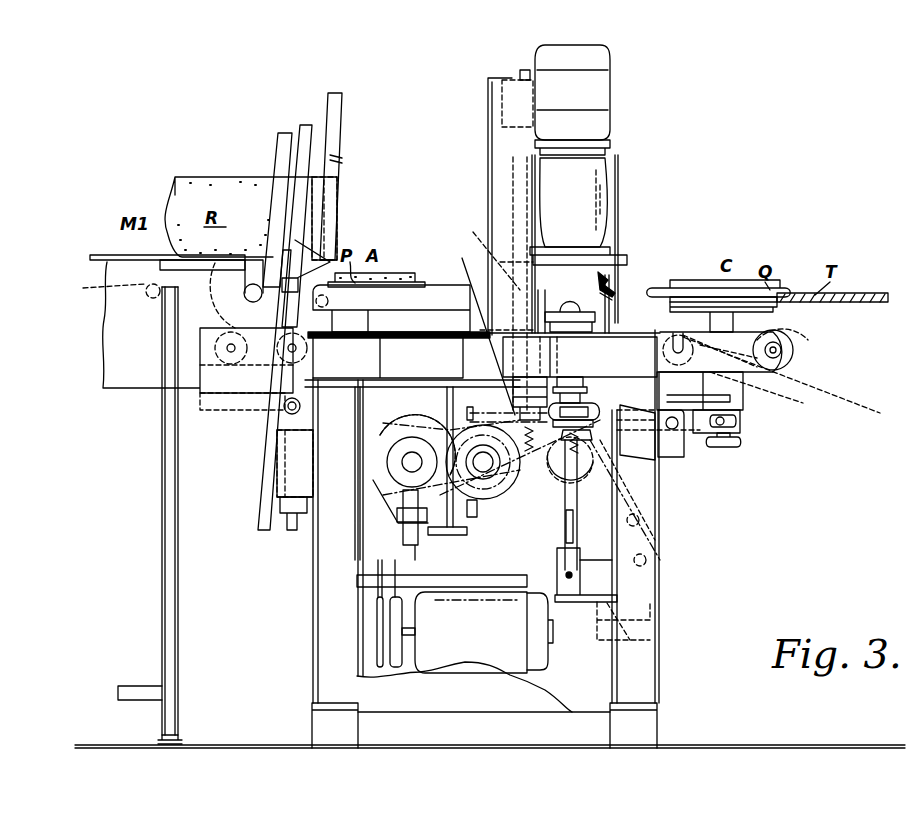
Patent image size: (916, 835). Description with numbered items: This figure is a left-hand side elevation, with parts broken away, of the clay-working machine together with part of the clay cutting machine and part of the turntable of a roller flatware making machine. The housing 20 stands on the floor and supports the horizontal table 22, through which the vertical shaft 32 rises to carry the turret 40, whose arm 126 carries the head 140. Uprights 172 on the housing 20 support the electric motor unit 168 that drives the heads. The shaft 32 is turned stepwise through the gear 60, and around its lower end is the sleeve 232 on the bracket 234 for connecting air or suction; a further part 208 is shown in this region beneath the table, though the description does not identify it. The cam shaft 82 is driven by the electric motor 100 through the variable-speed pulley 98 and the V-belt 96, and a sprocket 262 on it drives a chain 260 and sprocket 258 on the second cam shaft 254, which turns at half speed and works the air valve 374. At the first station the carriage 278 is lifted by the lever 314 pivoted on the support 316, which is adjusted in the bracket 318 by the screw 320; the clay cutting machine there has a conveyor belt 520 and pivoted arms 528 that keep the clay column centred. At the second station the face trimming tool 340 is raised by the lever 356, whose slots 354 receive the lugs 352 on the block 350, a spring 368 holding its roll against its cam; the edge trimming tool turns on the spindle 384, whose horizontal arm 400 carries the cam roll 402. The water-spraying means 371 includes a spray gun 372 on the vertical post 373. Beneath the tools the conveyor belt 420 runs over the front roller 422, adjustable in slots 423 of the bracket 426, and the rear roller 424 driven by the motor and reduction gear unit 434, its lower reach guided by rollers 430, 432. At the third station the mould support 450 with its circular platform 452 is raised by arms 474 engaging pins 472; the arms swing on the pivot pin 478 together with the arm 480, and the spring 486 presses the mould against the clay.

The housing 20 is at (313, 613).
The table 22 is at (660, 366).
The shaft 32 is at (642, 498).
The turret 40 is at (620, 195).
The bevel gear 60 is at (528, 492).
The cam shaft 82 is at (487, 472).
The V-belt 96 is at (385, 617).
The variable-speed pulley 98 is at (380, 650).
The electric motor 100 is at (495, 649).
The arm 126 is at (600, 172).
The head 140 is at (627, 258).
The electric motor unit 168 is at (592, 97).
The uprights 172 is at (497, 108).
The slide rod 208 is at (566, 522).
The sleeve 232 is at (575, 578).
The bracket 234 is at (587, 602).
The cam shaft 254 is at (402, 462).
The sprocket 258 is at (395, 437).
The chain 260 is at (457, 435).
The sprocket 262 is at (505, 530).
The carriage 278 is at (432, 290).
The lever 314 is at (283, 407).
The support 316 is at (290, 420).
The bracket 318 is at (300, 447).
The screw 320 is at (292, 530).
The face trimming tool 340 is at (571, 297).
The rectangular block 350 is at (600, 425).
The rectangular lugs 352 is at (570, 410).
The longitudinal slots 354 is at (597, 407).
The lever 356 is at (602, 430).
The spring 368 is at (640, 520).
The water-spraying means 371 is at (617, 292).
The spray gun 372 is at (617, 281).
The vertical post 373 is at (613, 320).
The air valve 374 is at (400, 535).
The vertical spindle 384 is at (480, 251).
The horizontal arm 400 is at (475, 327).
The cam roll 402 is at (487, 427).
The conveyor belt 420 is at (809, 330).
The front roller 422 is at (773, 353).
The longitudinal slots 423 is at (787, 350).
The rear roller 424 is at (215, 340).
The bracket 426 is at (773, 360).
The roller 430 is at (781, 386).
The roller 432 is at (310, 345).
The electric motor and reduction gear unit 434 is at (218, 393).
The mould support 450 is at (777, 307).
The circular platform 452 is at (773, 305).
The pins 472 is at (730, 422).
The arms 474 is at (730, 440).
The pivot pin 478 is at (676, 428).
The arm 480 is at (700, 391).
The spring 486 is at (620, 560).
The conveyor belt 520 is at (112, 256).
The pivoted arms 528 is at (335, 215).